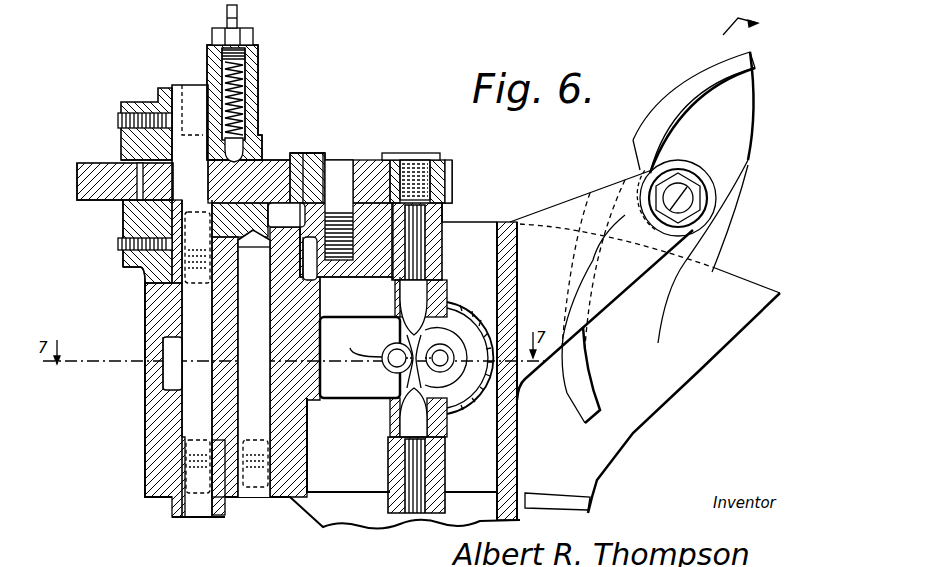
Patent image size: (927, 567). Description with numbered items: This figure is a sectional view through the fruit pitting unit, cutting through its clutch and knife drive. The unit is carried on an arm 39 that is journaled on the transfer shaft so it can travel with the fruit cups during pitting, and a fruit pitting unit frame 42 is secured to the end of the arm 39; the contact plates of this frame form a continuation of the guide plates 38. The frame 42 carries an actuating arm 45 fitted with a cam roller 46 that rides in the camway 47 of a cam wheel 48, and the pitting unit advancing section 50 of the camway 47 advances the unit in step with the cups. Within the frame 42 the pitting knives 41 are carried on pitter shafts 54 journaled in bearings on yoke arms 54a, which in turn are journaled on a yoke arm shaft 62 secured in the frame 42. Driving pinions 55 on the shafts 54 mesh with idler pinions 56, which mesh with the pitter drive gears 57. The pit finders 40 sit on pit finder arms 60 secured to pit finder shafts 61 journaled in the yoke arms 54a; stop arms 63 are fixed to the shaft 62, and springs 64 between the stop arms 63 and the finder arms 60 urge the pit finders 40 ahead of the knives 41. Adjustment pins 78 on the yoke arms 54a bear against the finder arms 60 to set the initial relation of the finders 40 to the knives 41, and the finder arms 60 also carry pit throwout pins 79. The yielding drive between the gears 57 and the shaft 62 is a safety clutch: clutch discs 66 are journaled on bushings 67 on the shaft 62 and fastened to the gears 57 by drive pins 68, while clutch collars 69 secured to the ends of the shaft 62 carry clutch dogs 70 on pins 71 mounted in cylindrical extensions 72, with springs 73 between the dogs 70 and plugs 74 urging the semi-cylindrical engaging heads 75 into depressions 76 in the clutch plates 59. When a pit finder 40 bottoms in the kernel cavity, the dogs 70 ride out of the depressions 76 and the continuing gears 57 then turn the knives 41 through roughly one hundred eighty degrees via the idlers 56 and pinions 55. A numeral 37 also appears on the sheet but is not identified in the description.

The valve unit 37 is at (434, 17).
The guide plates 38 is at (637, 427).
The arm 39 is at (343, 522).
The pit finders 40 is at (445, 365).
The pitting knives 41 is at (480, 323).
The fruit pitting unit frame 42 is at (510, 265).
The actuating arm 45 is at (580, 203).
The cam roller 46 is at (685, 163).
The camway 47 is at (714, 100).
The cam wheel 48 is at (577, 417).
The pitting unit advancing section 50 is at (643, 317).
The pitter shafts 54 is at (415, 247).
The yoke arms 54a is at (300, 497).
The driving pinions 55 is at (451, 163).
The idler pinions 56 is at (372, 157).
The pitter drive gears 57 is at (77, 190).
The clutch plates 59 is at (122, 158).
The pit finder arms 60 is at (342, 388).
The pit finder shafts 61 is at (252, 335).
The yoke arm shaft 62 is at (192, 373).
The stop arms 63 is at (192, 301).
The springs 64 is at (257, 440).
The clutch discs 66 is at (127, 175).
The bushings 67 is at (140, 183).
The drive pins 68 is at (125, 200).
The clutch collars 69 is at (158, 90).
The clutch dogs 70 is at (240, 152).
The pins 71 is at (248, 62).
The cylindrical extensions 72 is at (258, 70).
The springs 73 is at (248, 97).
The plugs 74 is at (217, 63).
The semi-cylindrical engaging heads 75 is at (290, 167).
The depressions 76 is at (262, 155).
The adjustment pins 78 is at (307, 352).
The pit throwout pins 79 is at (400, 370).